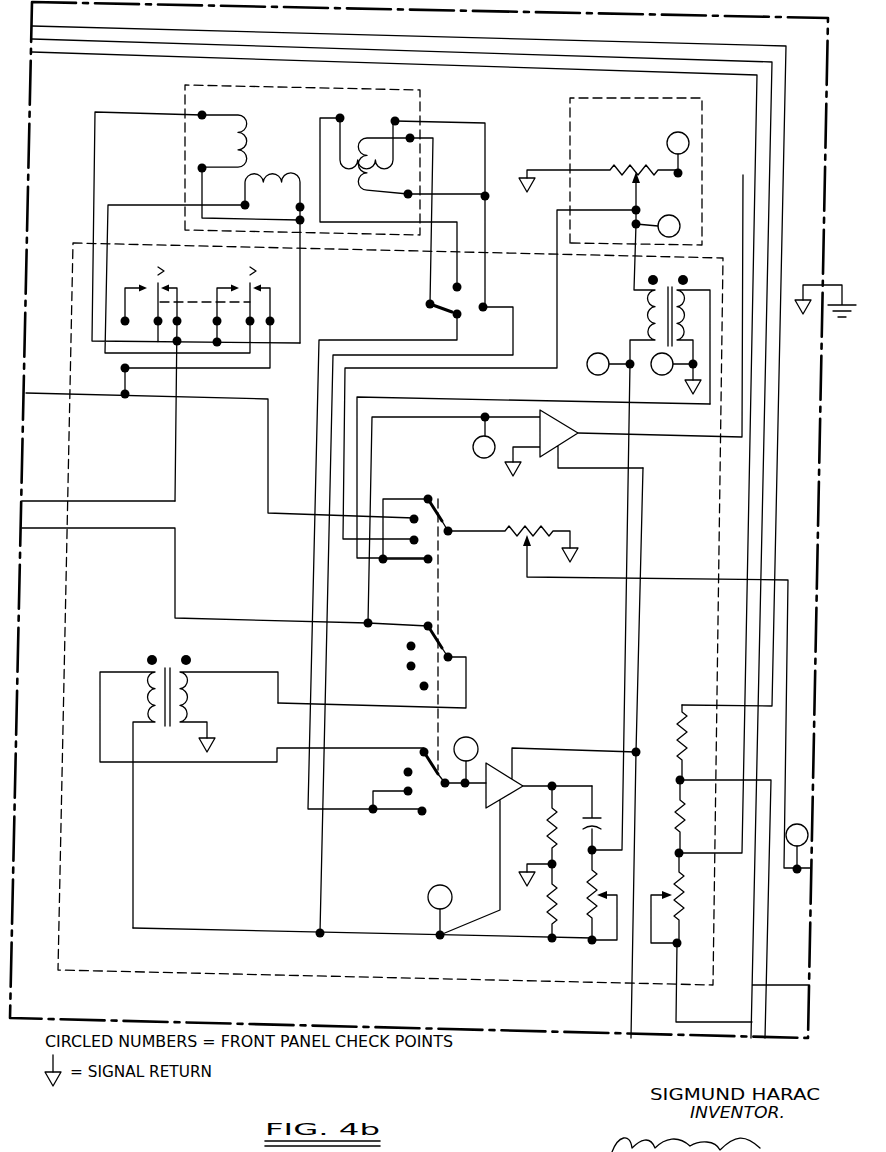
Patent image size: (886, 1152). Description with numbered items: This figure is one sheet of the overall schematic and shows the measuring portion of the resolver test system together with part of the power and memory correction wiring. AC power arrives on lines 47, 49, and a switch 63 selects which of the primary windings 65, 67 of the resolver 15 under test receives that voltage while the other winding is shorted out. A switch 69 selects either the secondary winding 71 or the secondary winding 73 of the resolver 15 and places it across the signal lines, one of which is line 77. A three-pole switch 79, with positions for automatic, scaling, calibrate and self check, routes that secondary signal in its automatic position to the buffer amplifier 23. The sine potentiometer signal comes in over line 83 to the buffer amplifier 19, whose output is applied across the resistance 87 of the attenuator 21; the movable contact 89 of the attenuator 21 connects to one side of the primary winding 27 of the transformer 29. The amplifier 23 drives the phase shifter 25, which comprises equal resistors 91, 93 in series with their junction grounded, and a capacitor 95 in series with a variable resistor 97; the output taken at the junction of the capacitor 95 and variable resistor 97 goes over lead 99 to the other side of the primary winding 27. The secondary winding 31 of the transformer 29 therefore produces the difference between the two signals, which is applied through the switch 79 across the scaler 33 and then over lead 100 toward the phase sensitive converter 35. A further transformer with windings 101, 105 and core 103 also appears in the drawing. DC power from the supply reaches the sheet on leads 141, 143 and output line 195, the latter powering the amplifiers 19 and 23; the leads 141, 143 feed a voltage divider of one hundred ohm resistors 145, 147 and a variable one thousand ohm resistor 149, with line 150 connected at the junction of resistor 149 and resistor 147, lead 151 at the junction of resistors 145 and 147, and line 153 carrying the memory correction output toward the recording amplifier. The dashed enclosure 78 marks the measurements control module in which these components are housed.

The lead 141 is at (80, 26).
The line 150 is at (76, 54).
The line 153 is at (134, 43).
The resolver 15 is at (421, 108).
The primary winding 65 is at (248, 138).
The primary winding 67 is at (282, 175).
The secondary winding 71 is at (380, 170).
The secondary winding 73 is at (362, 183).
The attenuator 21 is at (705, 136).
The resistance 87 is at (628, 168).
The movable contact 89 is at (630, 196).
The switch 63 is at (200, 300).
The switch 69 is at (442, 312).
The primary winding 27 is at (650, 326).
The secondary winding 31 is at (680, 328).
The transformer 29 is at (666, 346).
The line 47 is at (52, 391).
The buffer amplifier 19 is at (548, 416).
The line 49 is at (52, 498).
The line 83 is at (48, 530).
The phase sensitive converter 35 is at (315, 556).
The signal line 77 is at (329, 598).
The three-pole switch 79 is at (441, 598).
The scaler 33 is at (523, 528).
The lead 99 is at (626, 506).
The output line 195 is at (646, 542).
The transformer primary winding 101 is at (147, 688).
The transformer secondary winding 105 is at (190, 688).
The transformer core 103 is at (168, 727).
The buffer amplifier 23 is at (511, 758).
The resistor 91 is at (546, 826).
The resistor 93 is at (546, 908).
The capacitor 95 is at (600, 813).
The variable resistor 97 is at (597, 882).
The phase shifter 25 is at (582, 853).
The resistor 145 is at (684, 735).
The resistor 147 is at (683, 808).
The variable resistor 149 is at (681, 902).
The measurements control module 78 is at (716, 960).
The lead 100 is at (793, 872).
The lead 143 is at (698, 1023).
The lead 151 is at (764, 1008).